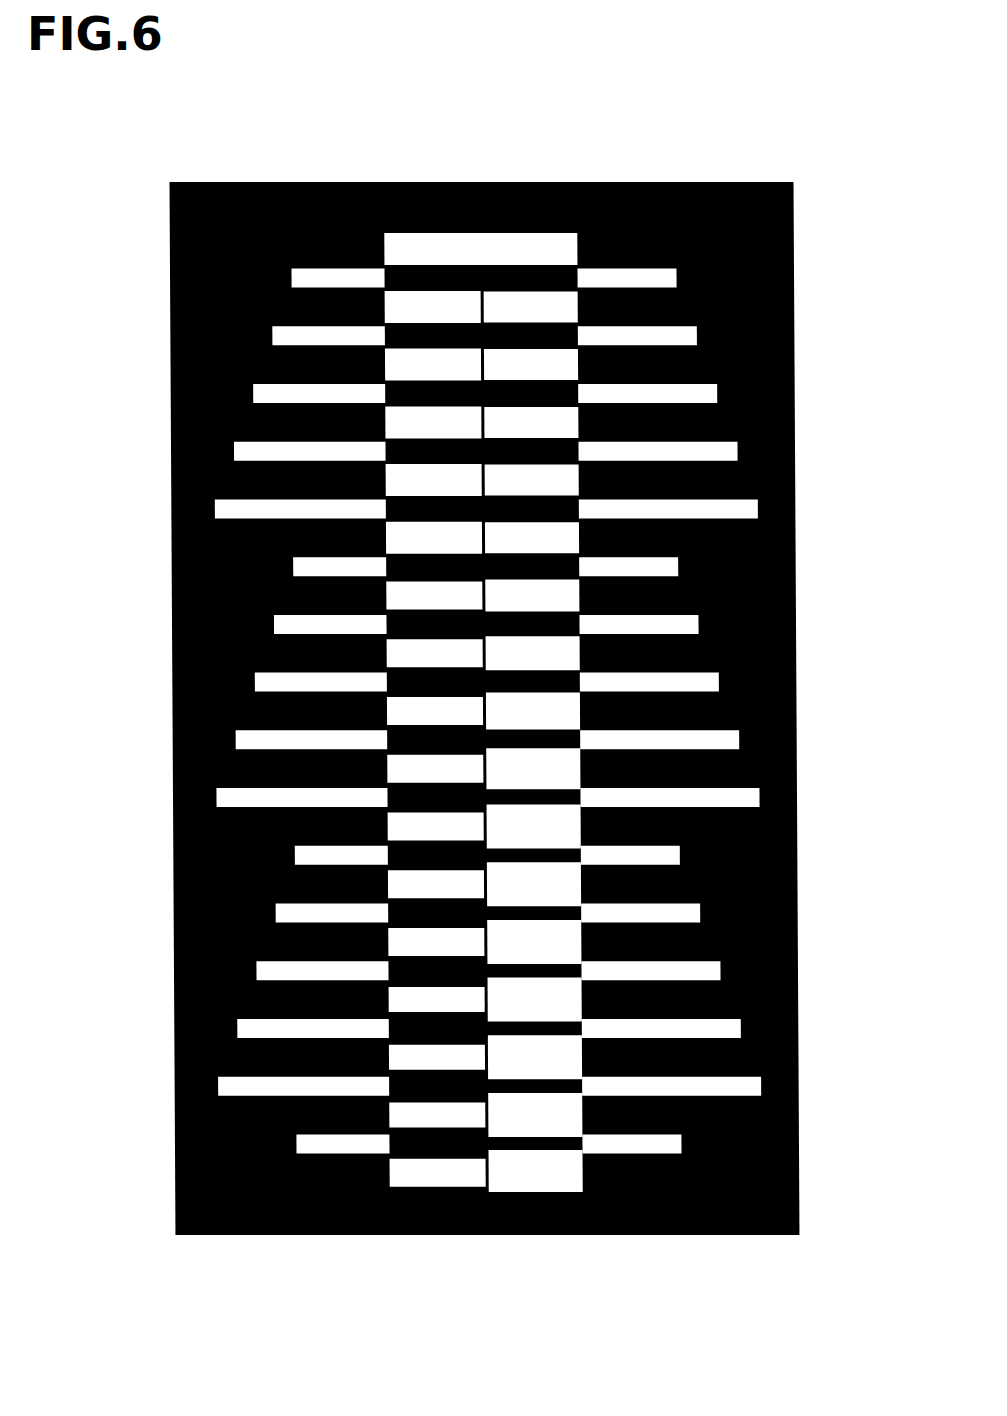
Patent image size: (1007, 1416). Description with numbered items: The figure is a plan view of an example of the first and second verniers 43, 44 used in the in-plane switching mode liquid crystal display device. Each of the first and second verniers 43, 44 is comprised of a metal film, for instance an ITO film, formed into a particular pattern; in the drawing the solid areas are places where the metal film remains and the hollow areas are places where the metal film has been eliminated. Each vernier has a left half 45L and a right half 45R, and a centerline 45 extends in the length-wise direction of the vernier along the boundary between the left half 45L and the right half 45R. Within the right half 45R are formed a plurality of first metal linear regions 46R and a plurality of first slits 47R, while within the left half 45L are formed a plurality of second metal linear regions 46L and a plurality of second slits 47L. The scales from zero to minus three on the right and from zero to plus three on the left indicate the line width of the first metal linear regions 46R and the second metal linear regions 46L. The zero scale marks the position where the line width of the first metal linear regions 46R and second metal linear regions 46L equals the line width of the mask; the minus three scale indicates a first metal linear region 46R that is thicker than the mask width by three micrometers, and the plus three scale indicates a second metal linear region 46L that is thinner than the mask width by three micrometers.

The first vernier 43 is at (140, 213).
The second vernier 44 is at (486, 659).
The centerline 45 is at (479, 1272).
The left half 45L is at (479, 98).
The right half 45R is at (793, 170).
The second metal linear regions 46L is at (398, 264).
The first metal linear regions 46R is at (491, 264).
The second slits 47L is at (301, 709).
The first slits 47R is at (669, 709).